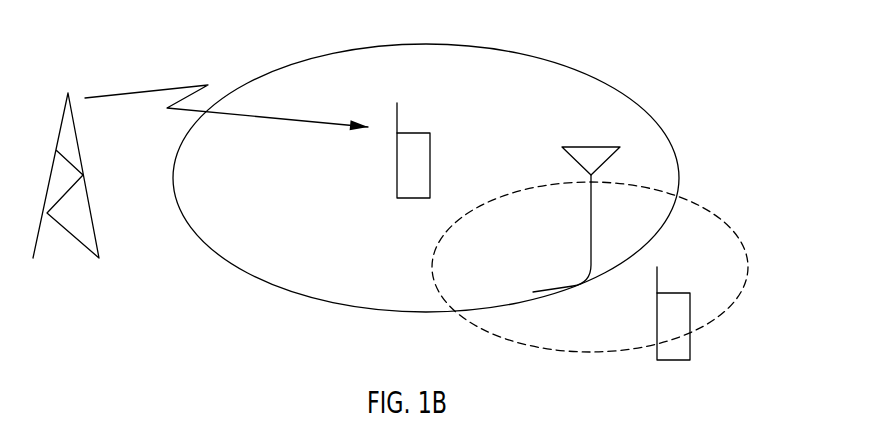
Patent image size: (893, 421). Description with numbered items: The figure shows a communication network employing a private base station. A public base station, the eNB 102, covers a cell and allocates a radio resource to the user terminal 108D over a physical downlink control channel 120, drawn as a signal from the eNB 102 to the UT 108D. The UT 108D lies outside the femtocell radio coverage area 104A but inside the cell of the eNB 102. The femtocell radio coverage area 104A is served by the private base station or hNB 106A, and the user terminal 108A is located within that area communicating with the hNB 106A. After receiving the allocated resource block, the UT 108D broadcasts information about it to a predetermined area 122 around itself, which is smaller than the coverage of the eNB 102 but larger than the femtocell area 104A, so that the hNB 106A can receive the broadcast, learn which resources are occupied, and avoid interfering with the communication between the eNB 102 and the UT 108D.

The eNB 102 is at (85, 176).
The physical downlink control channel 120 is at (180, 83).
The predetermined area 122 is at (668, 147).
The user terminal 108D is at (413, 198).
The private base station 106A is at (560, 219).
The femtocell radio coverage area 104A is at (749, 271).
The user terminal 108A is at (690, 360).